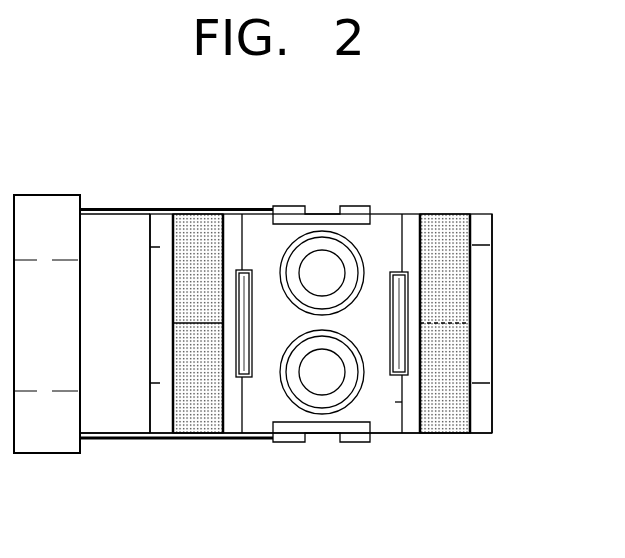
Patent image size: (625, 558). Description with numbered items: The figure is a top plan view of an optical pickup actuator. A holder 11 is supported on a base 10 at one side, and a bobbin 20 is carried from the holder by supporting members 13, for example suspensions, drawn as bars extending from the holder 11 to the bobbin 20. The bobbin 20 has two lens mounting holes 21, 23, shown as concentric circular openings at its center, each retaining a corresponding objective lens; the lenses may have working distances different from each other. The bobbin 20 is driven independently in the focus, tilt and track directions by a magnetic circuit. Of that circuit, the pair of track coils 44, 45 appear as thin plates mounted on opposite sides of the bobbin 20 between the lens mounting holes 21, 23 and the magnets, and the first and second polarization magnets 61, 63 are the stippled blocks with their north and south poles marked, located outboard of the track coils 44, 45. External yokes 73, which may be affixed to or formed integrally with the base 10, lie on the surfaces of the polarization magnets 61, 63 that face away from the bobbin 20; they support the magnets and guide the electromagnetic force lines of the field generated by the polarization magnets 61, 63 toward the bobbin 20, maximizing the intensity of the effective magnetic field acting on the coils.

The base 10 is at (110, 226).
The holder 11 is at (37, 443).
The supporting member 13 is at (203, 440).
The bobbin 20 is at (380, 223).
The lens mounting hole 21 is at (315, 255).
The lens mounting hole 23 is at (328, 383).
The track coil 44 is at (388, 375).
The track coil 45 is at (250, 378).
The first polarization magnet 61 is at (446, 230).
The second polarization magnet 63 is at (195, 222).
The external yoke 73 is at (160, 423).